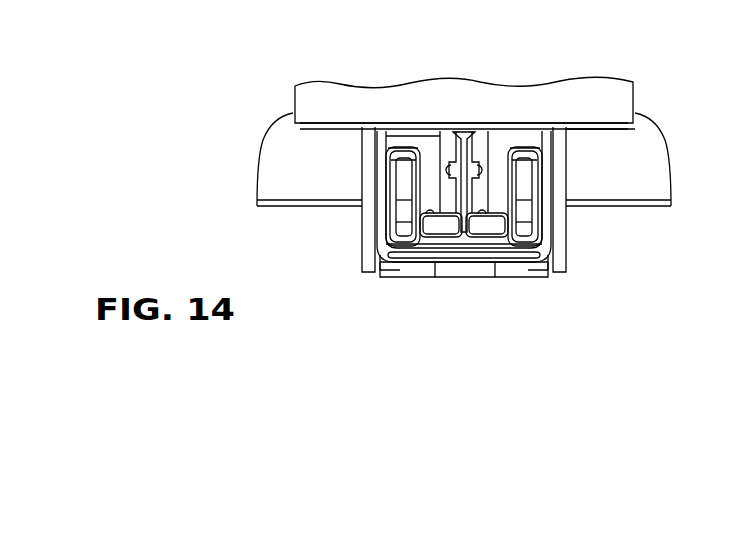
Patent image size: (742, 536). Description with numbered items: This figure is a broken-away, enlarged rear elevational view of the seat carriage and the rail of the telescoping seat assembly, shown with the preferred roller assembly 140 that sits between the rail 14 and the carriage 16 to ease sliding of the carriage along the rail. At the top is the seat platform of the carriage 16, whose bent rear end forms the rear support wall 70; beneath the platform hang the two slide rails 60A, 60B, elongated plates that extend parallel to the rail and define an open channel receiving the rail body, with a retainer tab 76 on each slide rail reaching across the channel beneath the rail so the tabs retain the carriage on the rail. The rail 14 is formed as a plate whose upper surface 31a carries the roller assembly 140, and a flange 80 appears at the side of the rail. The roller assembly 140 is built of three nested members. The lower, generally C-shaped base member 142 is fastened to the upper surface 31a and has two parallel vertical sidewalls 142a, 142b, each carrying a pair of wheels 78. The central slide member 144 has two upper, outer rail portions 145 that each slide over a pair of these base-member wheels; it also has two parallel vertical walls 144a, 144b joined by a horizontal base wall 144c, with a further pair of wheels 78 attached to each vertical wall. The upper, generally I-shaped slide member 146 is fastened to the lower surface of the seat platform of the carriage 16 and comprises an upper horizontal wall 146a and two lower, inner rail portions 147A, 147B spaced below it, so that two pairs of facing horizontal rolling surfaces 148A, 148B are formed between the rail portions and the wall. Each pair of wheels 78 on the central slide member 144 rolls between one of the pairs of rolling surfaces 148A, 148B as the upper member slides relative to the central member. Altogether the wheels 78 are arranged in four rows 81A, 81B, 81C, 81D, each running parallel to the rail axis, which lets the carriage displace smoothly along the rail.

The rail 14 is at (493, 268).
The carriage 16 is at (439, 72).
The upper surface 31a is at (522, 280).
The slide rail 60A is at (367, 263).
The slide rail 60B is at (562, 268).
The rear support wall 70 is at (596, 98).
The retainer tab 76 is at (384, 268).
The wheel 78 is at (431, 134).
The flange 80 is at (652, 127).
The row of wheels 81A is at (400, 203).
The row of wheels 81B is at (530, 220).
The row of wheels 81C is at (420, 233).
The row of wheels 81D is at (516, 220).
The roller assembly 140 is at (580, 92).
The base member 142 is at (446, 263).
The vertical sidewall 142a is at (386, 174).
The vertical sidewall 142b is at (541, 175).
The central slide member 144 is at (547, 243).
The vertical wall 144a is at (428, 186).
The vertical wall 144b is at (500, 186).
The horizontal base wall 144c is at (510, 280).
The outer rail portion 145 is at (393, 150).
The upper slide member 146 is at (444, 114).
The upper horizontal wall 146a is at (399, 122).
The inner rail portion 147A is at (444, 252).
The inner rail portion 147B is at (483, 240).
The rolling surfaces 148A is at (406, 135).
The rolling surfaces 148B is at (567, 95).